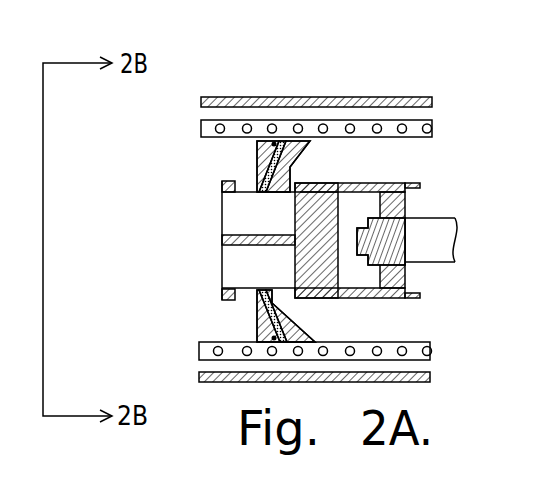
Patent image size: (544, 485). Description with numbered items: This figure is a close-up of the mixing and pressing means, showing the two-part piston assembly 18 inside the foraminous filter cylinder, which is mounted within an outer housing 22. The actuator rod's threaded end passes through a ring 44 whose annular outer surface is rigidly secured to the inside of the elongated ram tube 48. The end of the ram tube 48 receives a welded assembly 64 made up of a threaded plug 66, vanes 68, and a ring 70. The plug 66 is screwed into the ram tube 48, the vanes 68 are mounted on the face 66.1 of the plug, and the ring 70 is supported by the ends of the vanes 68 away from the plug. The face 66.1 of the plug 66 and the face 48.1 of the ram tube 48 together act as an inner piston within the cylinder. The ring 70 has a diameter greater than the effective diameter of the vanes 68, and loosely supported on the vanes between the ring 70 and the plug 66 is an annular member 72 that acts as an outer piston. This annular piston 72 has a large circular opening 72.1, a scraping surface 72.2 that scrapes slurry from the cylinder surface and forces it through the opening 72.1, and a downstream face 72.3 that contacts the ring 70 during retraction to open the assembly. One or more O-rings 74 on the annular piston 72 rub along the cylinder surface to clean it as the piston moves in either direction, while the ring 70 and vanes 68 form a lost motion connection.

The two-part piston assembly 18 is at (190, 236).
The outer housing 22 is at (371, 256).
The ring 44 is at (403, 275).
The ram tube 48 is at (405, 302).
The face of ram tube 48.1 is at (297, 290).
The welded assembly 64 is at (190, 262).
The threaded plug 66 is at (345, 155).
The face of threaded plug 66.1 is at (323, 192).
The vanes 68 is at (247, 213).
The ring 70 is at (257, 288).
The annular member 72 is at (332, 119).
The large circular opening 72.1 is at (258, 290).
The scraping surface 72.2 is at (312, 148).
The downstream face 72.3 is at (255, 160).
The O-ring 74 is at (280, 140).